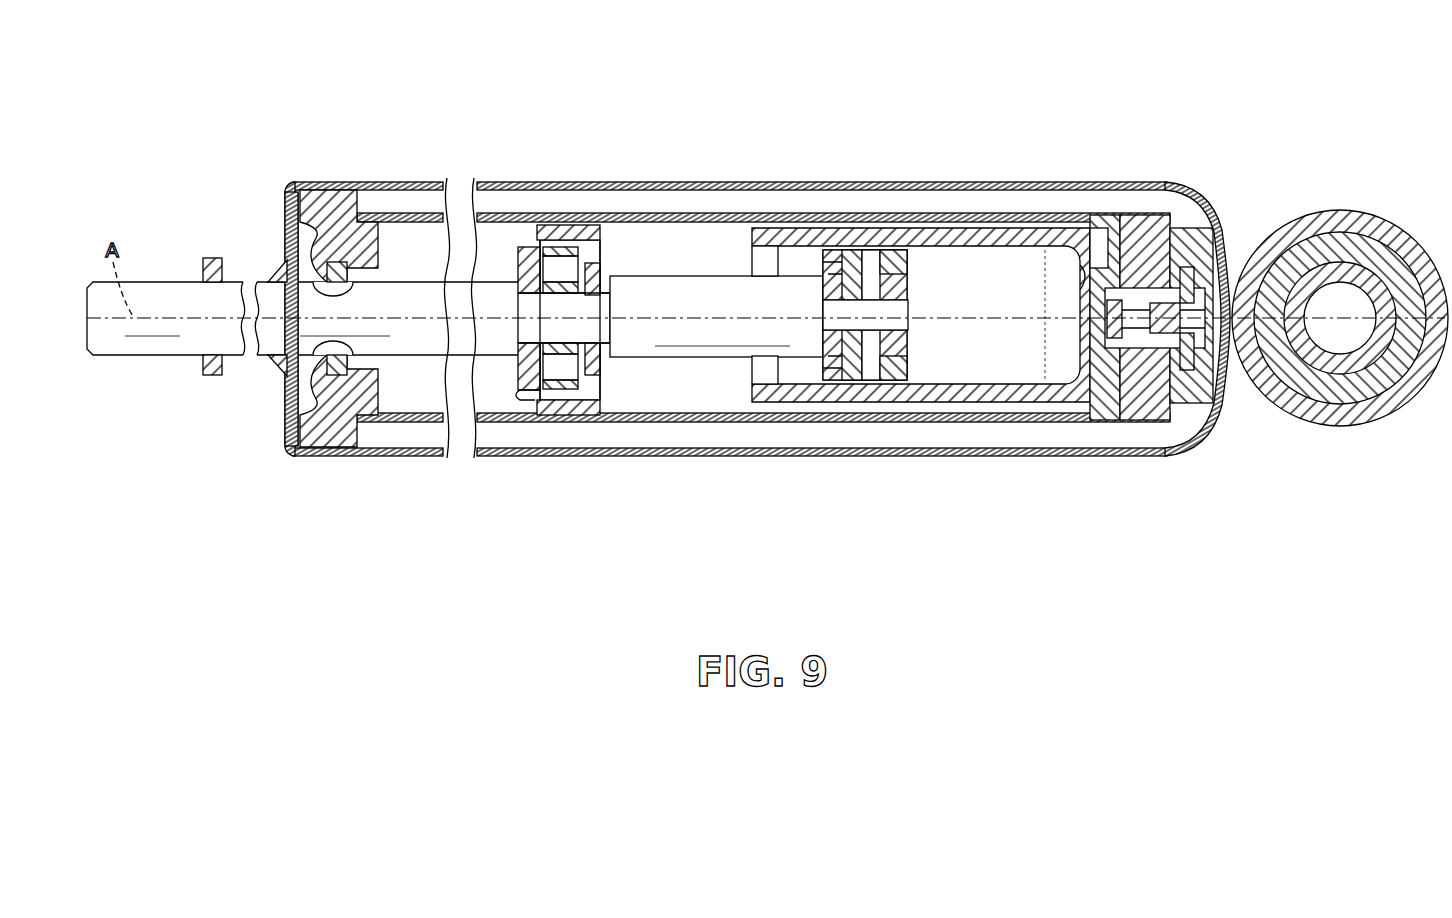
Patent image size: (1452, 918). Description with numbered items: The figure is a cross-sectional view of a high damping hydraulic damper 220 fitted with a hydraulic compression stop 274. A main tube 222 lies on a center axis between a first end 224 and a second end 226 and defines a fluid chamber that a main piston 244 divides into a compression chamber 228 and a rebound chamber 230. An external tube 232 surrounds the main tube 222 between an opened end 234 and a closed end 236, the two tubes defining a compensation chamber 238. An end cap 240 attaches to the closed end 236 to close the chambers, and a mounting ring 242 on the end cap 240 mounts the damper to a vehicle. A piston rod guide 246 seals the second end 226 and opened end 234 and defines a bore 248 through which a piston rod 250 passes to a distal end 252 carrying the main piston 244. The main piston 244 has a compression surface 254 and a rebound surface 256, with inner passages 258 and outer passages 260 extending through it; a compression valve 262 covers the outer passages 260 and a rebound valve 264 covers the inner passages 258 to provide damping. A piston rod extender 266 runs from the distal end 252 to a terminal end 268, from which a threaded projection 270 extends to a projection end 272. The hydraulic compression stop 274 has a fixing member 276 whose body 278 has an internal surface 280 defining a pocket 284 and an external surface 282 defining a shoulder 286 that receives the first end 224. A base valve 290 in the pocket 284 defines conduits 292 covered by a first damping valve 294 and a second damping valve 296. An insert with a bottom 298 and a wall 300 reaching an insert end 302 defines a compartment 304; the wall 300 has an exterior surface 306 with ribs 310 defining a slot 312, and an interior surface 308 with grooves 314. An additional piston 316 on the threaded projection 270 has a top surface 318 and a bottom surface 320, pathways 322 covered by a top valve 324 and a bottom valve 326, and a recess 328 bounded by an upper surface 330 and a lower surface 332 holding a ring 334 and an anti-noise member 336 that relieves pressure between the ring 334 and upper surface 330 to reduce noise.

The high damping hydraulic damper 220 is at (190, 148).
The main tube 222 is at (413, 209).
The first end 224 is at (1140, 212).
The second end 226 is at (357, 208).
The compression chamber 228 is at (630, 407).
The rebound chamber 230 is at (467, 190).
The external tube 232 is at (485, 228).
The opened end 234 is at (285, 182).
The closed end 236 is at (1205, 190).
The compensation chamber 238 is at (1097, 225).
The end cap 240 is at (1228, 200).
The mounting ring 242 is at (1375, 427).
The main piston 244 is at (535, 400).
The piston rod guide 246 is at (323, 188).
The bore 248 is at (312, 282).
The piston rod 250 is at (130, 296).
The distal end 252 is at (497, 330).
The compression surface 254 is at (549, 315).
The rebound surface 256 is at (522, 278).
The inner passages 258 is at (572, 228).
The outer passages 260 is at (555, 400).
The compression valve 262 is at (545, 225).
The rebound valve 264 is at (575, 398).
The piston rod extender 266 is at (633, 297).
The terminal end 268 is at (850, 382).
The threaded projection 270 is at (823, 306).
The projection end 272 is at (910, 310).
The hydraulic compression stop 274 is at (992, 408).
The fixing member 276 is at (1078, 262).
The body 278 is at (1130, 225).
The internal surface 280 is at (1180, 445).
The external surface 282 is at (1150, 430).
The pocket 284 is at (1120, 333).
The shoulder 286 is at (1100, 440).
The base valve 290 is at (1232, 425).
The conduits 292 is at (1205, 380).
The first damping valve 294 is at (1176, 230).
The second damping valve 296 is at (1215, 395).
The bottom 298 is at (1078, 267).
The wall 300 is at (955, 422).
The insert end 302 is at (755, 400).
The compartment 304 is at (1010, 245).
The exterior surface 306 is at (930, 403).
The interior surface 308 is at (792, 404).
The ribs 310 is at (890, 408).
The slot 312 is at (945, 230).
The grooves 314 is at (807, 385).
The additional piston 316 is at (855, 403).
The top surface 318 is at (805, 276).
The bottom surface 320 is at (838, 240).
The pathways 322 is at (845, 258).
The top valve 324 is at (835, 262).
The bottom valve 326 is at (910, 267).
The recess 328 is at (903, 345).
The upper surface 330 is at (860, 248).
The lower surface 332 is at (885, 262).
The ring 334 is at (870, 265).
The anti-noise member 336 is at (822, 345).